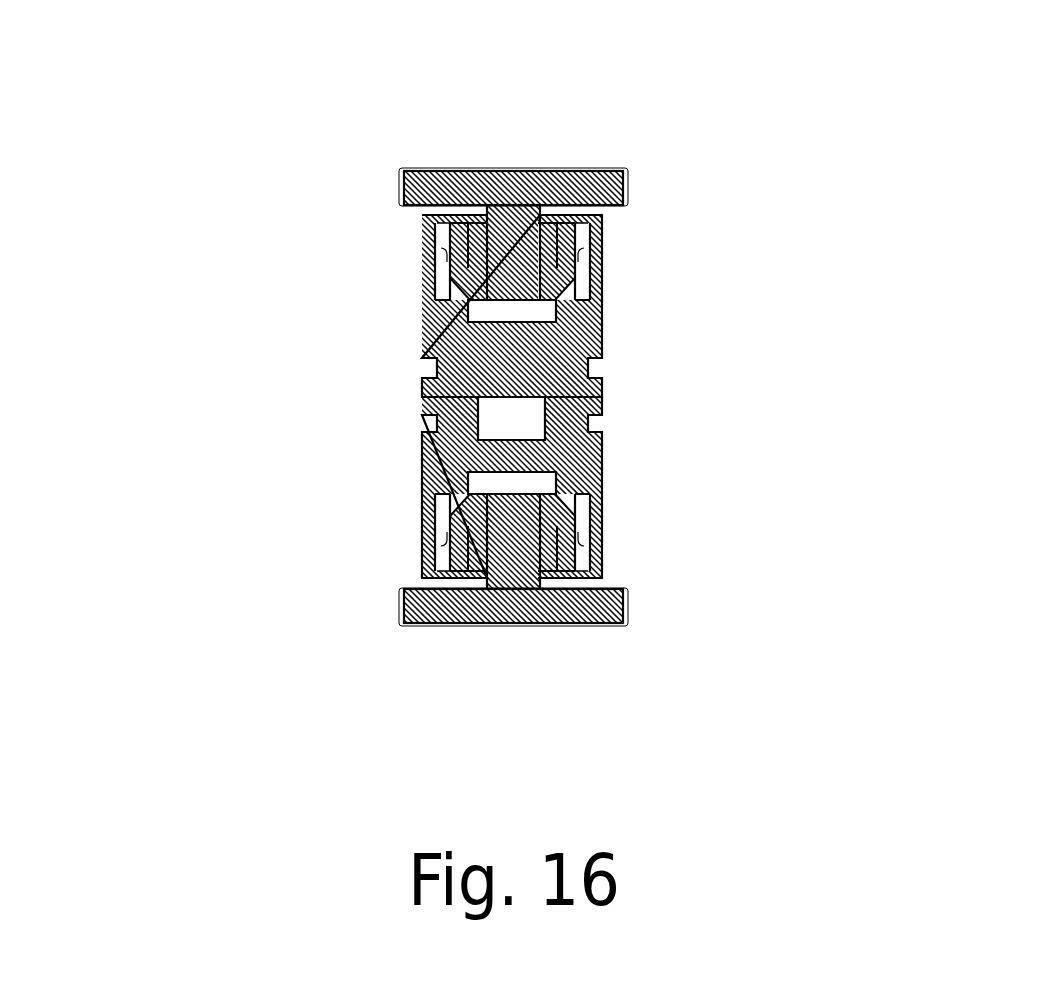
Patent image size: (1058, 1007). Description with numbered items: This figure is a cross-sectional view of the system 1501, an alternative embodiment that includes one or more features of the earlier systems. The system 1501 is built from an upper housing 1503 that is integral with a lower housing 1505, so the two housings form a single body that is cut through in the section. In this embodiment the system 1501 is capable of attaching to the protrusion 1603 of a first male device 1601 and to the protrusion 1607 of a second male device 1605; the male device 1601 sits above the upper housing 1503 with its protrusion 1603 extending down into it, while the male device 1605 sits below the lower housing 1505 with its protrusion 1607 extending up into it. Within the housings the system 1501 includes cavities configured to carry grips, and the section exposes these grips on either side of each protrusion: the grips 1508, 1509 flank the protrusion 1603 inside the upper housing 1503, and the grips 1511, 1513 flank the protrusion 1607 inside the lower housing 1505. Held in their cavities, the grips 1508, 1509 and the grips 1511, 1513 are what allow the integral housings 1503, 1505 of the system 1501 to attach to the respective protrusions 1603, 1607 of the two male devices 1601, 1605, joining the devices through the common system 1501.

The system 1501 is at (221, 140).
The upper housing 1503 is at (724, 327).
The lower housing 1505 is at (758, 531).
The grip 1508 is at (458, 260).
The grip 1509 is at (573, 250).
The grip 1511 is at (447, 546).
The grip 1513 is at (583, 543).
The male device 1601 is at (462, 152).
The protrusion 1603 is at (542, 242).
The male device 1605 is at (430, 630).
The protrusion 1607 is at (560, 570).